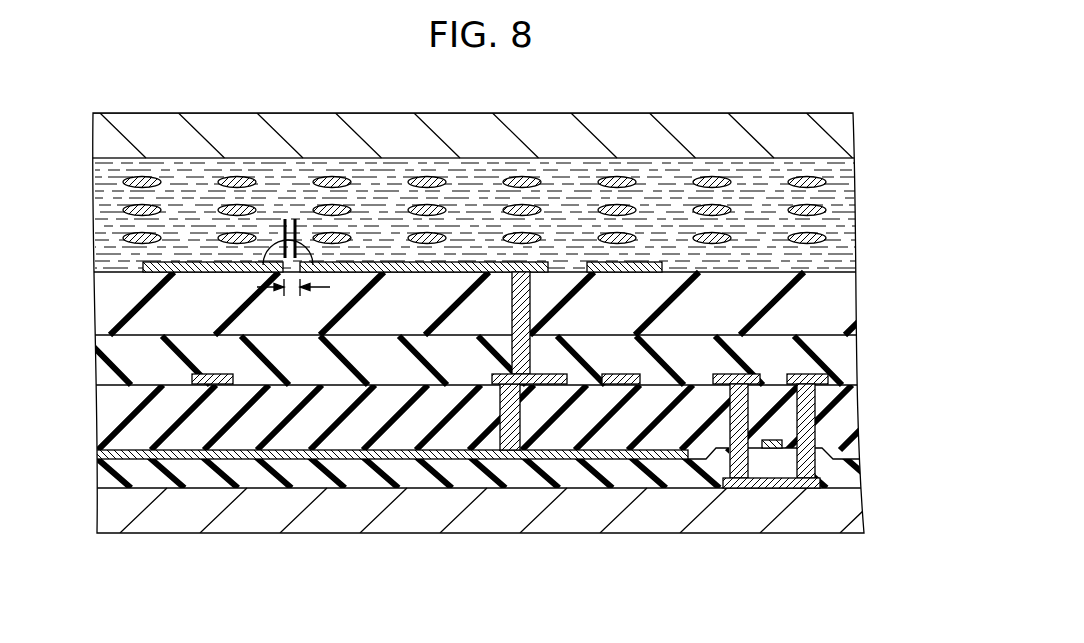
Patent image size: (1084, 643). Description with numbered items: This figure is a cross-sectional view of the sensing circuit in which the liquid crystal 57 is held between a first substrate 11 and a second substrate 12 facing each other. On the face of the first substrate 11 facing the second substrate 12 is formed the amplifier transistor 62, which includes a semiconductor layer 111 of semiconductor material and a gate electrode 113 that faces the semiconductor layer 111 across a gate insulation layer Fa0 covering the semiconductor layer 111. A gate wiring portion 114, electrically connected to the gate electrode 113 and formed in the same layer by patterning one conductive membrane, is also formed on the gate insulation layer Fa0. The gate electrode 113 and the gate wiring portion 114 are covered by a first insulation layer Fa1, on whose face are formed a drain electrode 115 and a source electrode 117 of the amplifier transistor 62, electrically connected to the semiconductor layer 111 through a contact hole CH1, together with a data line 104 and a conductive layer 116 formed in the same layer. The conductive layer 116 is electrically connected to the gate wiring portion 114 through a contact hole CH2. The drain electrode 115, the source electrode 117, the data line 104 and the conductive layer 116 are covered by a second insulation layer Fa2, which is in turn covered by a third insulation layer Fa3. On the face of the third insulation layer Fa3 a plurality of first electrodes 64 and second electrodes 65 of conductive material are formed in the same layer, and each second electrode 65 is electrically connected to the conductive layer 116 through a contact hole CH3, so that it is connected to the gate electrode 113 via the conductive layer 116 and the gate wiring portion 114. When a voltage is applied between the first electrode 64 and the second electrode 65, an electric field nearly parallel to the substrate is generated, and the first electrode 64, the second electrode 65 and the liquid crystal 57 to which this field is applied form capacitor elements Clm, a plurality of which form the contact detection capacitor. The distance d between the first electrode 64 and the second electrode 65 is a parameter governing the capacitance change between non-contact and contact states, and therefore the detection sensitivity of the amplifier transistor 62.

The second substrate 12 is at (848, 133).
The liquid crystal 57 is at (848, 190).
The first electrode 64 is at (178, 263).
The second electrode 65 is at (400, 265).
The capacitor element Clm is at (287, 213).
The distance between the first electrode and the second electrode d is at (293, 298).
The third insulation layer Fa3 is at (848, 284).
The second insulation layer Fa2 is at (848, 350).
The first insulation layer Fa1 is at (848, 402).
The gate insulation layer Fa0 is at (498, 521).
The first substrate 11 is at (847, 512).
The data line 104 is at (222, 372).
The conductive layer 116 is at (555, 372).
The drain electrode 115 is at (733, 372).
The source electrode 117 is at (815, 372).
The gate wiring portion 114 is at (350, 459).
The contact hole CH3 is at (514, 314).
The contact hole CH2 is at (502, 388).
The contact hole CH1 is at (735, 432).
The semiconductor layer 111 is at (687, 493).
The gate electrode 113 is at (770, 448).
The amplifier transistor 62 is at (783, 494).